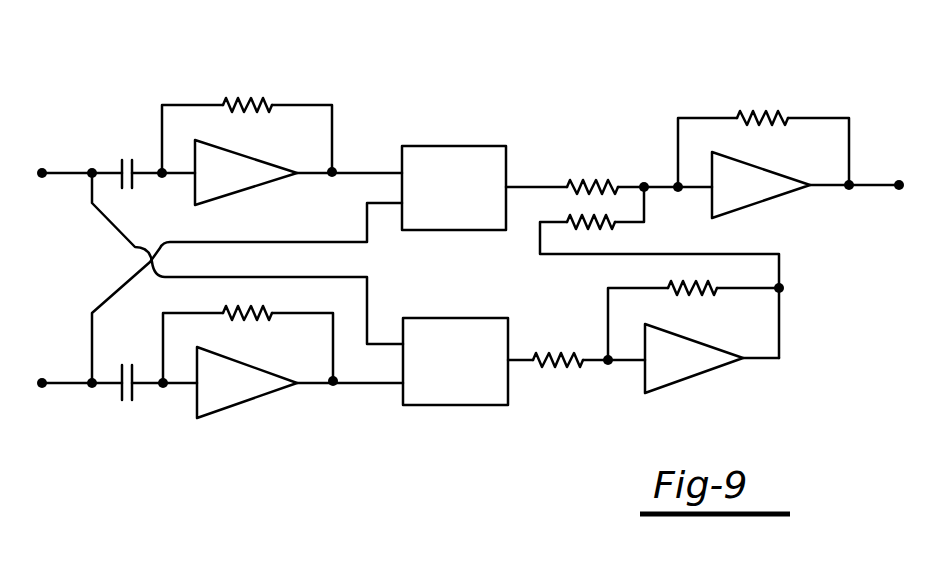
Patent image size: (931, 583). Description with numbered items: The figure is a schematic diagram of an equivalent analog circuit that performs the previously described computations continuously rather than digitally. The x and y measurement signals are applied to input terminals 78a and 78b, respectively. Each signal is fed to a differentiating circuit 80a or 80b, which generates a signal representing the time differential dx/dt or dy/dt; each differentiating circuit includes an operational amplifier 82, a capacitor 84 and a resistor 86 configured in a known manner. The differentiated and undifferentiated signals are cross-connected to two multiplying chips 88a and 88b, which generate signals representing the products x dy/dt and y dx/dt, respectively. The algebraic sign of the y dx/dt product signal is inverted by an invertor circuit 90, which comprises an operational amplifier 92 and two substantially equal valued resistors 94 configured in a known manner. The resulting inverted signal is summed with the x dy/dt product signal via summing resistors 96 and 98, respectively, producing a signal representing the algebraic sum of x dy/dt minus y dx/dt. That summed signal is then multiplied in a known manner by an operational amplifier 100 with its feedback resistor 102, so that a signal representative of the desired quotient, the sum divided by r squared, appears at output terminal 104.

The input terminal 78a is at (42, 387).
The input terminal 78b is at (42, 178).
The differentiating circuit 80a is at (345, 427).
The differentiating circuit 80b is at (343, 45).
The operational amplifier 82 is at (245, 160).
The capacitor 84 is at (120, 162).
The resistor 86 is at (225, 100).
The multiplying chip 88a is at (450, 146).
The multiplying chip 88b is at (447, 327).
The invertor circuit 90 is at (740, 361).
The operational amplifier 92 is at (677, 373).
The resistors 94 is at (575, 363).
The summing resistor 96 is at (608, 226).
The summing resistor 98 is at (627, 138).
The operational amplifier 100 is at (760, 192).
The feedback resistor 102 is at (785, 113).
The output terminal 104 is at (898, 190).